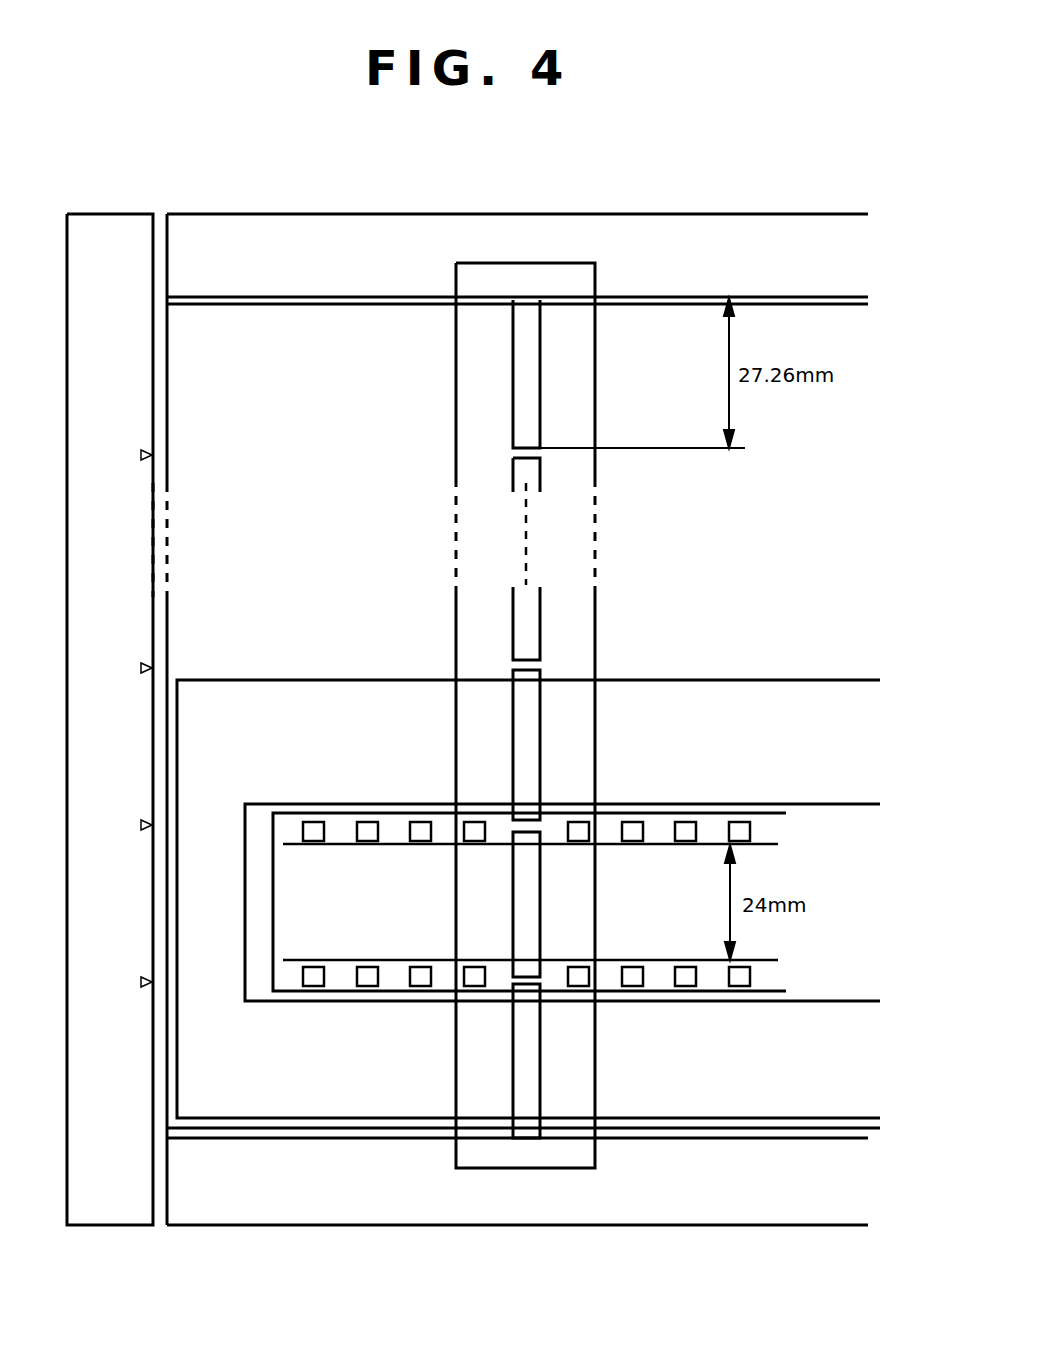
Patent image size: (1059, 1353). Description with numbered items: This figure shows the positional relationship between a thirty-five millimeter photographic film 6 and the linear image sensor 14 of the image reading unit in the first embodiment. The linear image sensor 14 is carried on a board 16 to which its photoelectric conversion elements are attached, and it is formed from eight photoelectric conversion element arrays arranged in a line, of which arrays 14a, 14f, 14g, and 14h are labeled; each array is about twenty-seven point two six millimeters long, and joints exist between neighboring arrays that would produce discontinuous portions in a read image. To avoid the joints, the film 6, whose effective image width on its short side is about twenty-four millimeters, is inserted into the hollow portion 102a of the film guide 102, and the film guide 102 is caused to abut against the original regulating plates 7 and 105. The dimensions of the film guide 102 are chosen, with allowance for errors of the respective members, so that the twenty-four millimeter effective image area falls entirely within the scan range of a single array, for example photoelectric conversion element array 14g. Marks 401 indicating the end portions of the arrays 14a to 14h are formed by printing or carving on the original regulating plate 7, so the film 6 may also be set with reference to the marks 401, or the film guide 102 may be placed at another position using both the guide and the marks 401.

The original regulating plate 7 is at (110, 224).
The marks 401 is at (140, 456).
The film holder 102 is at (262, 692).
The hollow portion 102a is at (262, 1002).
The 35-mm photographic film 6 is at (342, 856).
The original regulating plate 105 is at (262, 1214).
The board 16 is at (596, 622).
The linear image sensor 14 is at (531, 719).
The photoelectric conversion element array 14a is at (541, 374).
The photoelectric conversion element array 14f is at (542, 742).
The photoelectric conversion element array 14g is at (541, 895).
The photoelectric conversion element array 14h is at (542, 1057).